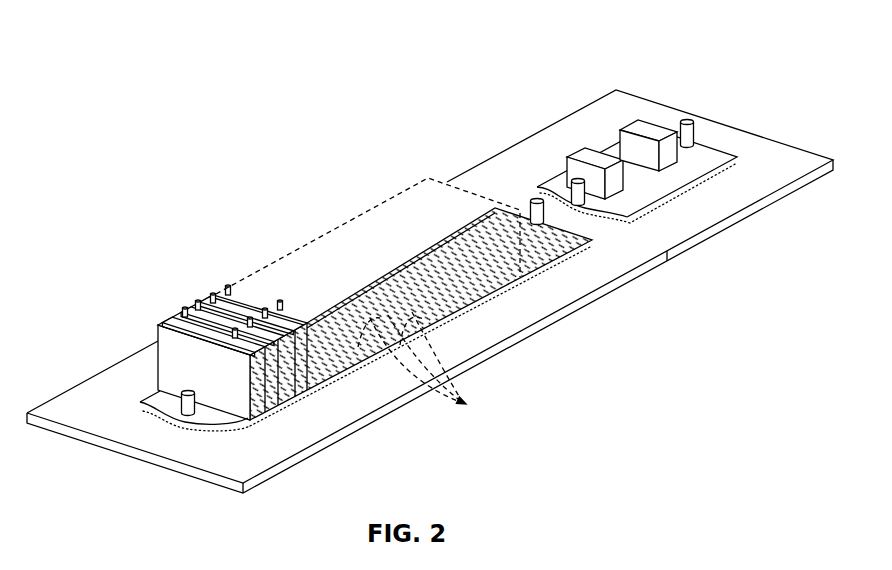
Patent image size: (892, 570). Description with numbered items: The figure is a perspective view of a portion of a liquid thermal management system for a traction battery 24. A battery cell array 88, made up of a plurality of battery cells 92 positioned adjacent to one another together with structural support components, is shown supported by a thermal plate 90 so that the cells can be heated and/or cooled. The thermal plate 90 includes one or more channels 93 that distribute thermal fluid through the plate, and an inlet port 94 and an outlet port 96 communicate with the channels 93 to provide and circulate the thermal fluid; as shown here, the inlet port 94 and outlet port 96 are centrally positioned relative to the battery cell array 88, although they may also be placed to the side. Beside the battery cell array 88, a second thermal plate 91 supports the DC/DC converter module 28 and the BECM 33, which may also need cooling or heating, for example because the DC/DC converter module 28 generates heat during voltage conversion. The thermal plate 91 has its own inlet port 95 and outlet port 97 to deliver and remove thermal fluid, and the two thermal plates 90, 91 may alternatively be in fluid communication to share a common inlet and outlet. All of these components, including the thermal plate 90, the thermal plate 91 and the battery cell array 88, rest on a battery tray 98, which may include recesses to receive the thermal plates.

The traction battery 24 is at (274, 237).
The DC/DC converter module 28 is at (587, 157).
The BECM 33 is at (638, 120).
The battery cell array 88 is at (372, 207).
The thermal plate 90 is at (233, 420).
The thermal plate 91 is at (652, 190).
The battery cells 92 is at (228, 294).
The channels 93 is at (470, 405).
The inlet port 94 is at (542, 222).
The inlet port 95 is at (685, 118).
The outlet port 96 is at (196, 406).
The outlet port 97 is at (570, 190).
The battery tray 98 is at (783, 158).